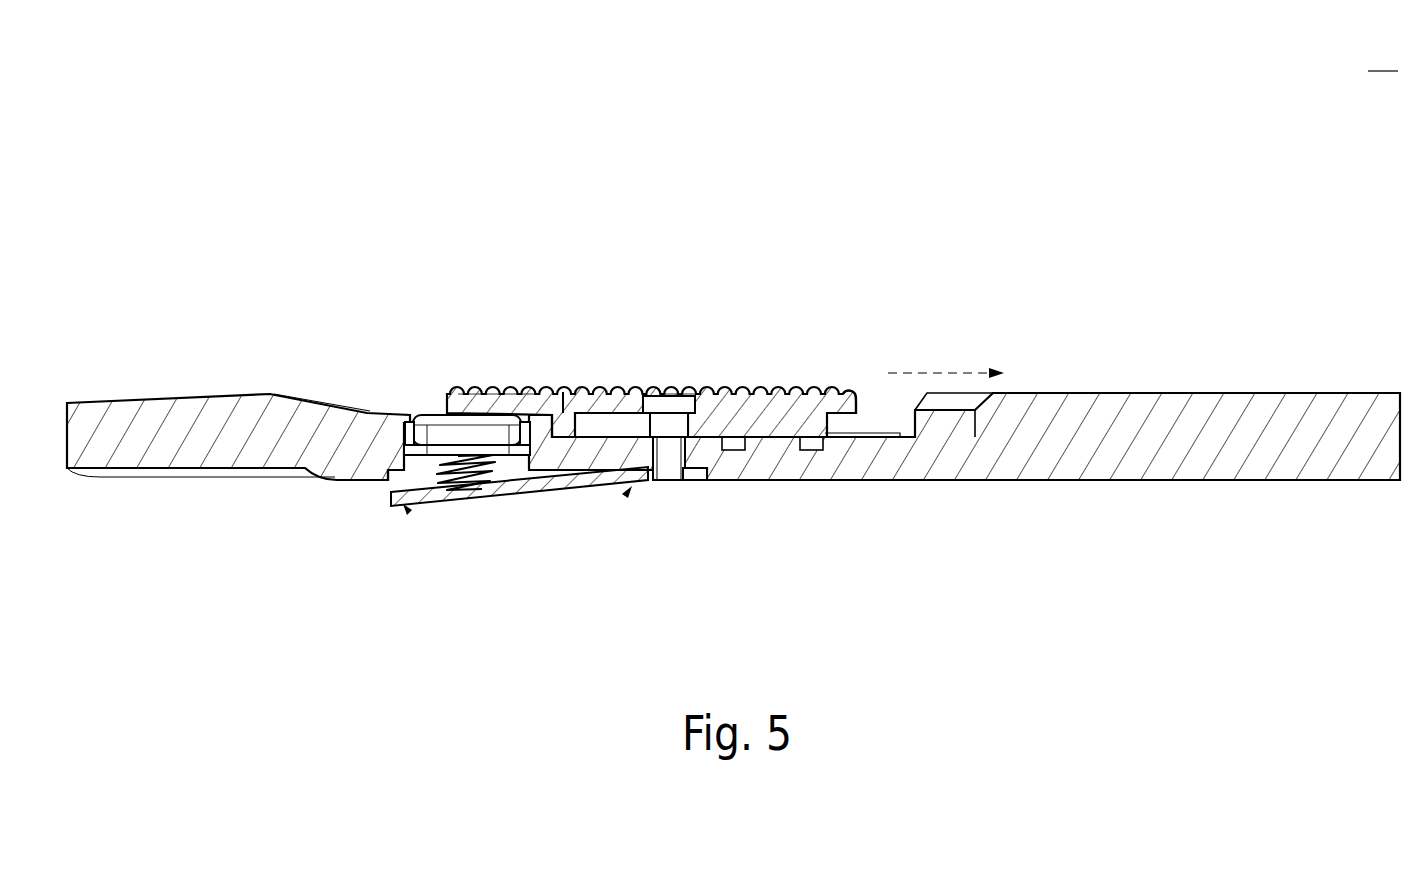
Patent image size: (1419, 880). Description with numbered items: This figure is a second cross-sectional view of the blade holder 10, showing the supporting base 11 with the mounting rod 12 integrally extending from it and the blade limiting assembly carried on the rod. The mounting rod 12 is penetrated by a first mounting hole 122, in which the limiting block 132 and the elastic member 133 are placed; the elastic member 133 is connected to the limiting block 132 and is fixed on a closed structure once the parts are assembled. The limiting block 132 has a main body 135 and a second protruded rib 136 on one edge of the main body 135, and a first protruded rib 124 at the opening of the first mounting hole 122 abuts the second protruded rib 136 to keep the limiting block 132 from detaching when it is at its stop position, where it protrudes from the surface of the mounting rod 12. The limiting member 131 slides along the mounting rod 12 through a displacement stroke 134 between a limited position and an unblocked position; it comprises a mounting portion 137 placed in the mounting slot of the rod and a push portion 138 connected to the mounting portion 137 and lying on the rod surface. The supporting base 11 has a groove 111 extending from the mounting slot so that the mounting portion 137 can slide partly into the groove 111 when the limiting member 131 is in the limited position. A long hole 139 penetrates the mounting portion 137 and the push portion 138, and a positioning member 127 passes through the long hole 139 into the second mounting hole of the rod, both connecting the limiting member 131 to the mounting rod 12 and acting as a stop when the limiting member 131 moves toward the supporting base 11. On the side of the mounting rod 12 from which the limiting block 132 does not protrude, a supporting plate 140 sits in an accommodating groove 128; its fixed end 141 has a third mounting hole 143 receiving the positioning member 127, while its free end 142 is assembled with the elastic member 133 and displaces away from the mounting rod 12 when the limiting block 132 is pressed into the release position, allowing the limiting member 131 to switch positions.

The blade holder 10 is at (1383, 59).
The supporting base 11 is at (1222, 393).
The groove 111 is at (858, 478).
The mounting rod 12 is at (220, 395).
The first mounting hole 122 is at (364, 480).
The first protruded rib 124 is at (530, 418).
The positioning member 127 is at (650, 402).
The accommodating groove 128 is at (713, 482).
The limiting member 131 is at (857, 376).
The limiting block 132 is at (478, 404).
The elastic member 133 is at (458, 492).
The displacement stroke 134 is at (945, 372).
The main body 135 is at (441, 417).
The second protruded rib 136 is at (400, 418).
The mounting portion 137 is at (800, 418).
The push portion 138 is at (742, 415).
The long hole 139 is at (680, 392).
The supporting plate 140 is at (553, 487).
The fixed end 141 is at (627, 497).
The free end 142 is at (408, 513).
The third mounting hole 143 is at (693, 482).